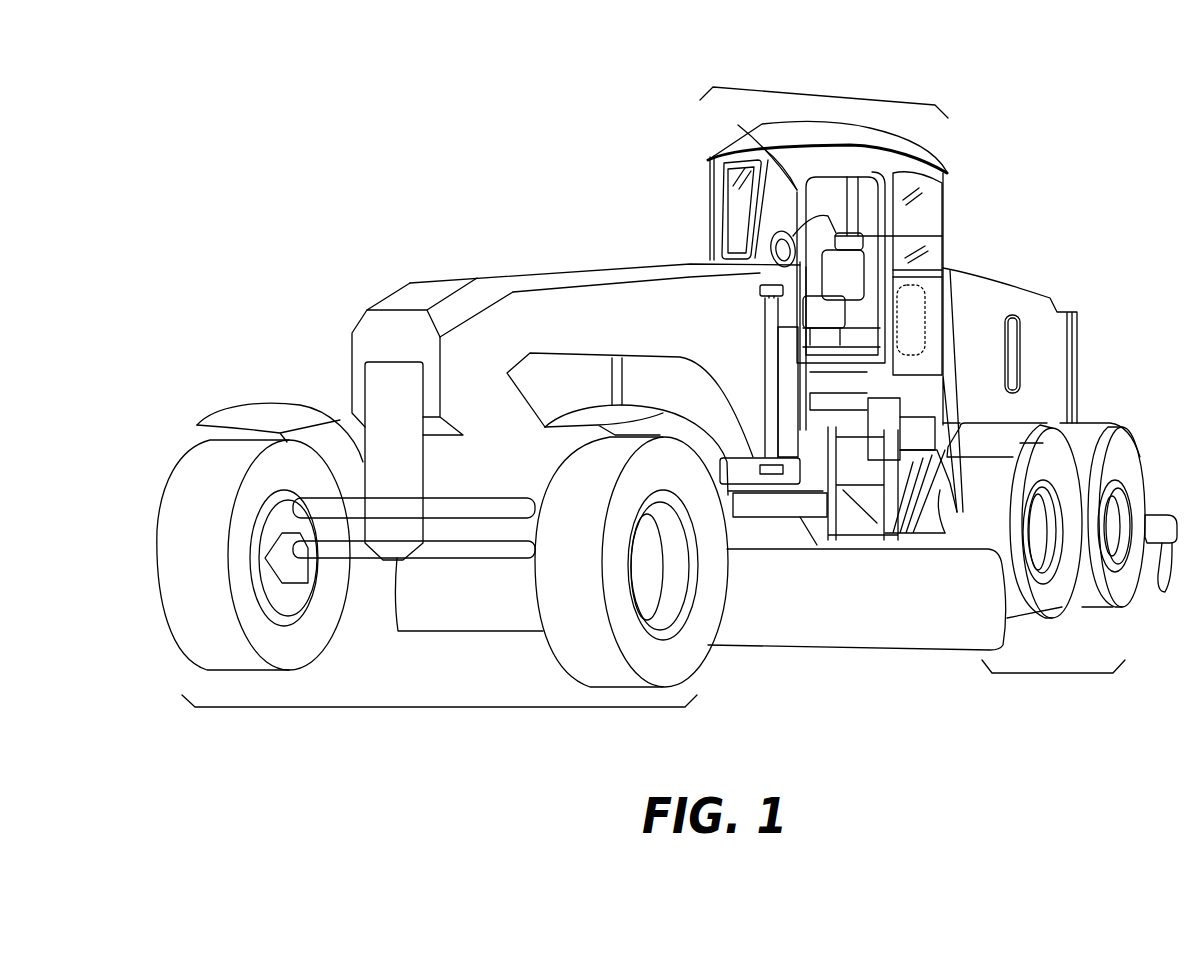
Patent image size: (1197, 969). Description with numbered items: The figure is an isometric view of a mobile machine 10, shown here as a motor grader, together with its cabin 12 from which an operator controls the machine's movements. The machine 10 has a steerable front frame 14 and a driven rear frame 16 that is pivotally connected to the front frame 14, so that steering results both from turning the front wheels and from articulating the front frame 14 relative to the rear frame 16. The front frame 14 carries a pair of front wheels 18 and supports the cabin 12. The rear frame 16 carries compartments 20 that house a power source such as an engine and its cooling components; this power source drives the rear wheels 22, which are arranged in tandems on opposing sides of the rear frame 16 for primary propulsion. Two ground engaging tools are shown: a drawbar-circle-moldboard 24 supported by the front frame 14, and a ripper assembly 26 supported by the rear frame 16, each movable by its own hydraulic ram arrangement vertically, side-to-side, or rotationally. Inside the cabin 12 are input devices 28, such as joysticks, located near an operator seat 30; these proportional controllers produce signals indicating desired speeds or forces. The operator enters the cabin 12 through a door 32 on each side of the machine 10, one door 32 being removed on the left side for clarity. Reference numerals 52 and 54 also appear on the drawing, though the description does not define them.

The mobile machine 10 is at (1054, 107).
The cabin 12 is at (832, 93).
The front frame 14 is at (437, 709).
The rear frame 16 is at (1050, 674).
The front wheels 18 is at (366, 657).
The compartments 20 is at (1043, 290).
The rear wheels 22 is at (1133, 467).
The drawbar-circle-moldboard 24 is at (814, 656).
The ripper assembly 26 is at (1146, 604).
The input devices 28 is at (837, 233).
The operator seat 30 is at (942, 233).
The door 32 is at (717, 262).
The cab pillar 52 is at (738, 126).
The cab door window 54 is at (729, 193).